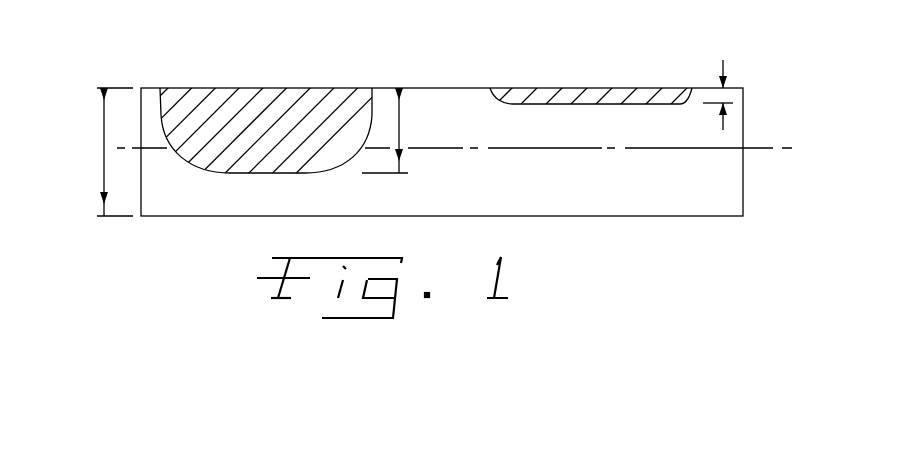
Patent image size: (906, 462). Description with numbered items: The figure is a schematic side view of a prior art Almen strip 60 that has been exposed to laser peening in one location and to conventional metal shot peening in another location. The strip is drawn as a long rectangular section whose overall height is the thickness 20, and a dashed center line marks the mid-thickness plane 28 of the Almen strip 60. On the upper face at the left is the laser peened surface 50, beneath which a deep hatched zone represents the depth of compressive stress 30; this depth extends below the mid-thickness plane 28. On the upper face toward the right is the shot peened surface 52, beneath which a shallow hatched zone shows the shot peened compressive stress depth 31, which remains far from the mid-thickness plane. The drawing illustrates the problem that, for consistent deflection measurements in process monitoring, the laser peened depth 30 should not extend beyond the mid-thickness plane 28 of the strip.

The thickness 20 is at (100, 148).
The mid-thickness plane 28 is at (696, 151).
The depth of compressive stress 30 is at (403, 132).
The shot peened compressive stress depth 31 is at (724, 93).
The laser peened surface 50 is at (252, 88).
The shot peened surface 52 is at (593, 88).
The Almen strip 60 is at (625, 190).